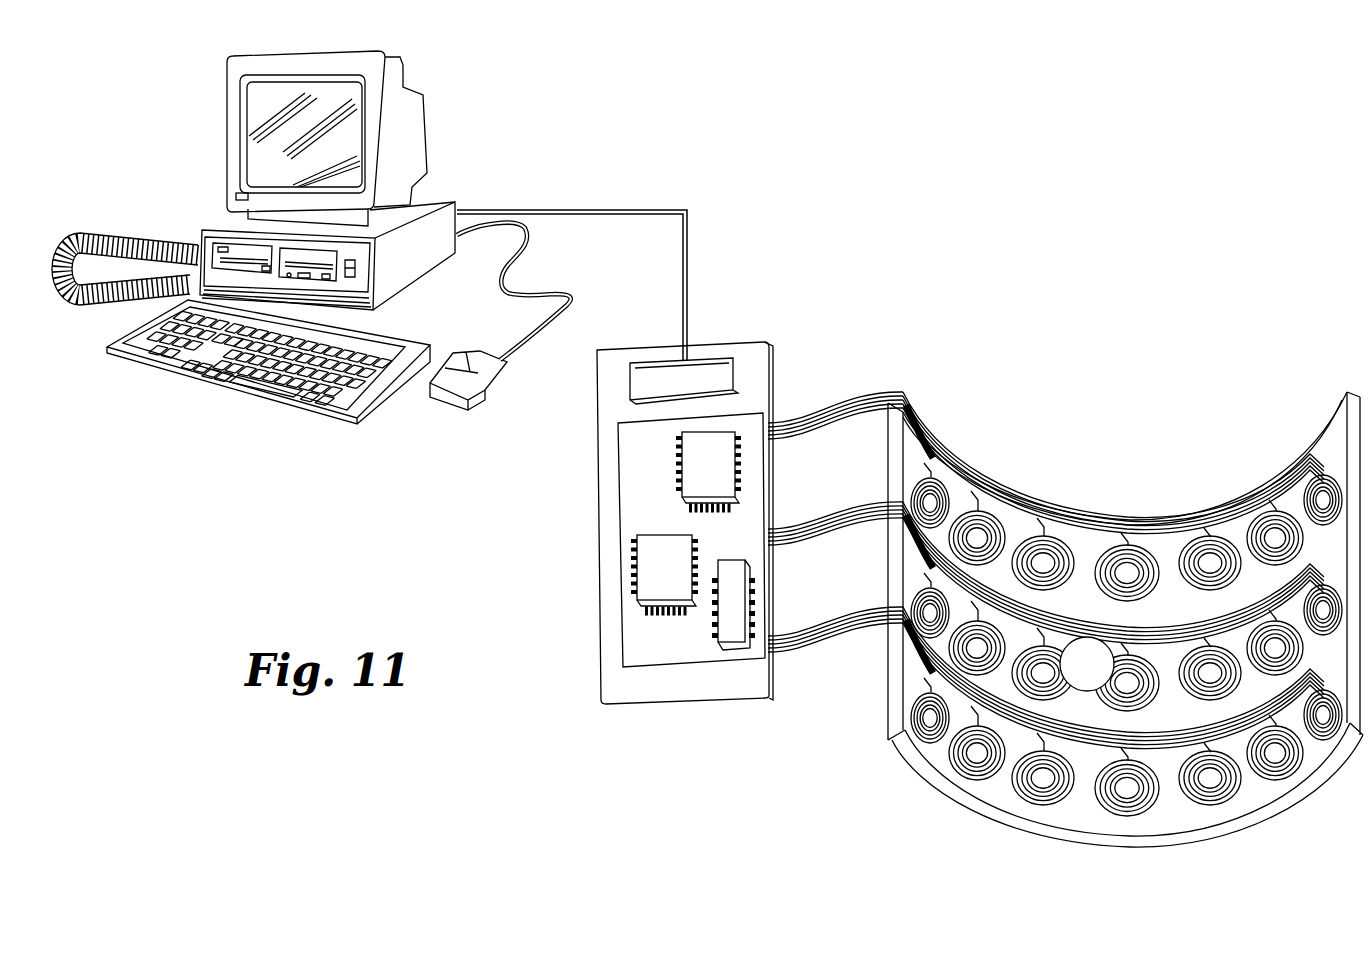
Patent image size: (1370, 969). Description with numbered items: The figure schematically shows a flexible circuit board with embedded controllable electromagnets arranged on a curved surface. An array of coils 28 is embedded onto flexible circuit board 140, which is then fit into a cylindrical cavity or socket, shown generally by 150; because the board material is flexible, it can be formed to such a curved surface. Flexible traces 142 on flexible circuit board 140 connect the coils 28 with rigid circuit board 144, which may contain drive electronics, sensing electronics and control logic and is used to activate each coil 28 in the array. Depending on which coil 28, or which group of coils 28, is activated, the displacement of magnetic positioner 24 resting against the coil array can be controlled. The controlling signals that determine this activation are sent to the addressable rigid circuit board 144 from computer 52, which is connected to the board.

The computer 52 is at (450, 198).
The rigid circuit board 144 is at (680, 695).
The flexible traces 142 is at (882, 385).
The cylindrical cavity or socket 150 is at (1125, 613).
The flexible circuit board 140 is at (1180, 817).
The coil 28 is at (1227, 802).
The magnetic positioner 24 is at (1087, 645).